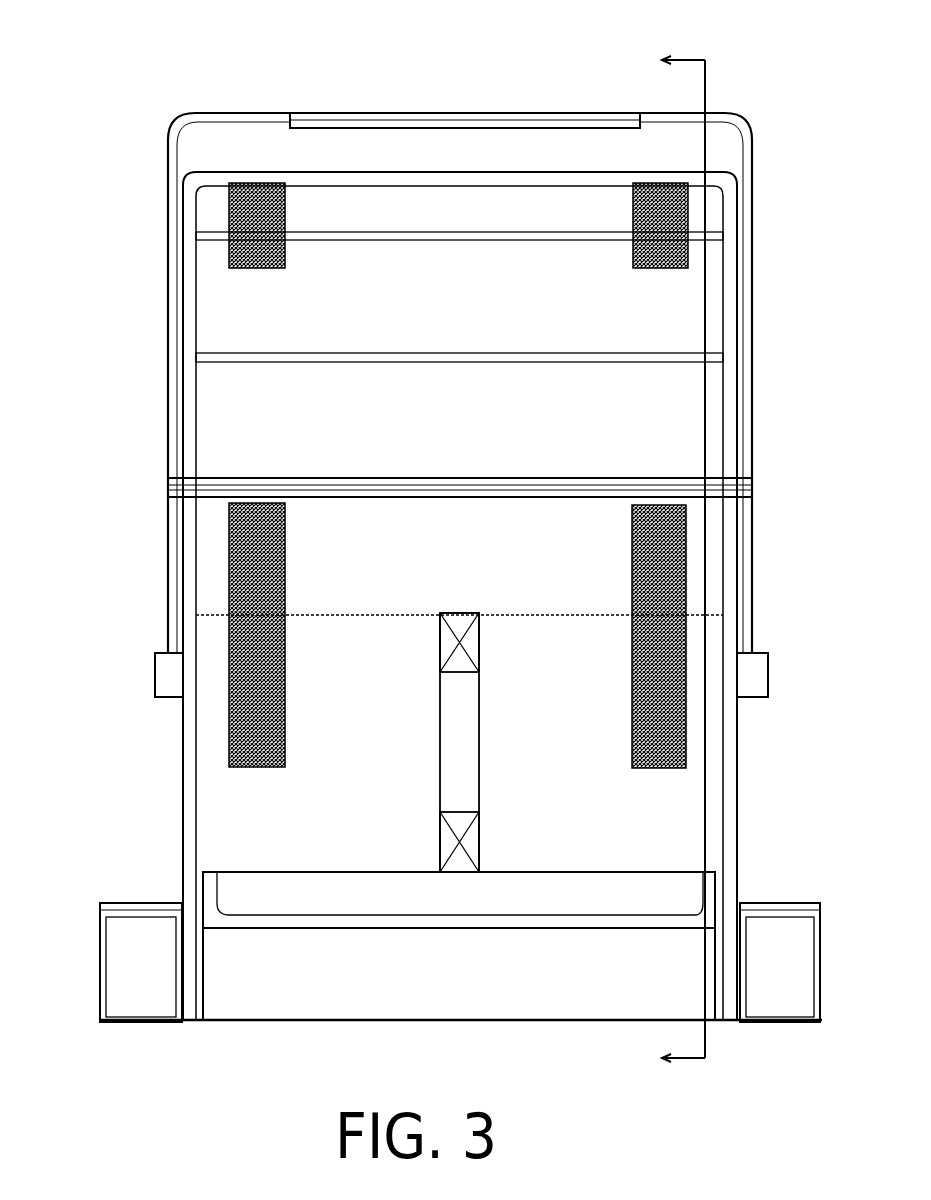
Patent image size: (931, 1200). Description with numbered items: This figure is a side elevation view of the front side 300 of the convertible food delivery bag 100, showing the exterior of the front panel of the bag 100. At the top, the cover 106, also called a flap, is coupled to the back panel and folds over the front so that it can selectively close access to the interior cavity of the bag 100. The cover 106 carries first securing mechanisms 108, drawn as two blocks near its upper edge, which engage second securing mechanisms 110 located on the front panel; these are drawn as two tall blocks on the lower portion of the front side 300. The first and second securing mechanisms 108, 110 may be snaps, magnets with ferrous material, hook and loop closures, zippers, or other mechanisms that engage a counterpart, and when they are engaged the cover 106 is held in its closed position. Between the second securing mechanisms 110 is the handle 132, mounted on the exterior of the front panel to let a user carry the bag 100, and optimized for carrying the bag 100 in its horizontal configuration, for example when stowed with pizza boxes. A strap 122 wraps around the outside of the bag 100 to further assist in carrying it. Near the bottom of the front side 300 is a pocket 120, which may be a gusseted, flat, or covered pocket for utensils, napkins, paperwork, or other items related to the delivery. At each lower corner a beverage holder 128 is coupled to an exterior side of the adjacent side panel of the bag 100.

The front side 300 is at (140, 33).
The convertible food delivery bag 100 is at (140, 506).
The cover 106 is at (213, 310).
The first securing mechanisms 108 is at (286, 207).
The second securing mechanisms 110 is at (686, 580).
The pocket 120 is at (312, 998).
The strap 122 is at (197, 117).
The beverage holder 128 is at (120, 903).
The handle 132 is at (456, 779).